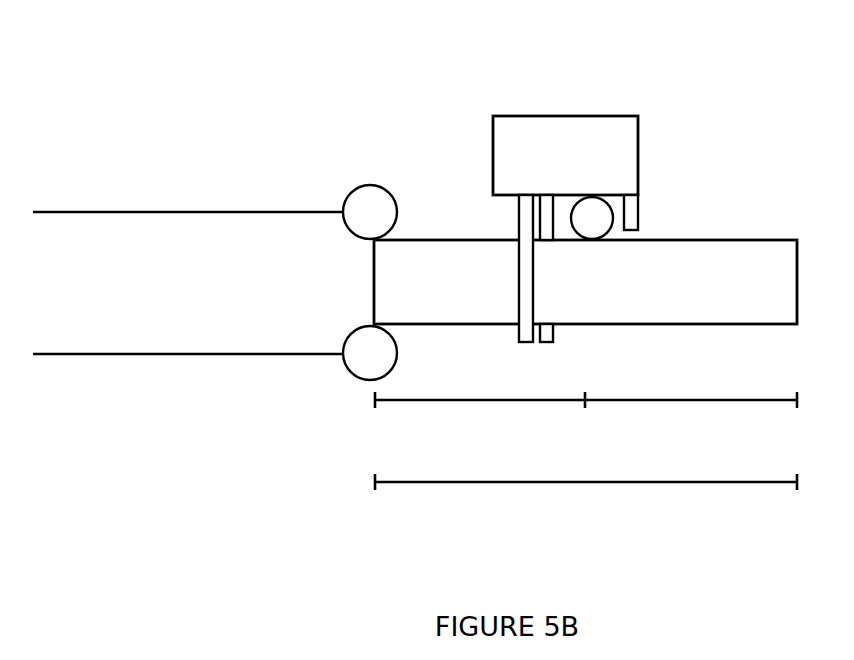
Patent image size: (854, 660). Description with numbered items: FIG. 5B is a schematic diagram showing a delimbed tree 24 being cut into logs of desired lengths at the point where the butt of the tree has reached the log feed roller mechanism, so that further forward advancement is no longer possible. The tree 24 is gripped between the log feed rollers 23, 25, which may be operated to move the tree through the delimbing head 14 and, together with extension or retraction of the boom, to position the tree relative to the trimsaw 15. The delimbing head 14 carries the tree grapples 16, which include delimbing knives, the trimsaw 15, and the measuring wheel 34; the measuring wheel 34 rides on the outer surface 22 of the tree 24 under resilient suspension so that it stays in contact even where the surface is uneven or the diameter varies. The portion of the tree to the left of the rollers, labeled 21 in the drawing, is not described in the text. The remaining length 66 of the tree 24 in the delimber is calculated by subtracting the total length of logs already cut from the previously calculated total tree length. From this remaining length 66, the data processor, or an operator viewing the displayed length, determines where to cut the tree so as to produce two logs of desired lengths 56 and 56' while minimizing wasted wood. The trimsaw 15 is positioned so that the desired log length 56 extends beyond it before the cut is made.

The delimbing head 14 is at (565, 155).
The trimsaw 15 is at (640, 213).
The tree grapples 16 is at (517, 238).
The catheter body 21 is at (189, 283).
The outer surface 22 is at (417, 238).
The log feed roller 23 is at (370, 212).
The tree 24 is at (585, 282).
The log feed roller 25 is at (370, 353).
The measuring wheel 34 is at (592, 218).
The desired log length 56 is at (691, 417).
The desired log length 56' is at (480, 417).
The remaining length of tree 66 is at (586, 497).